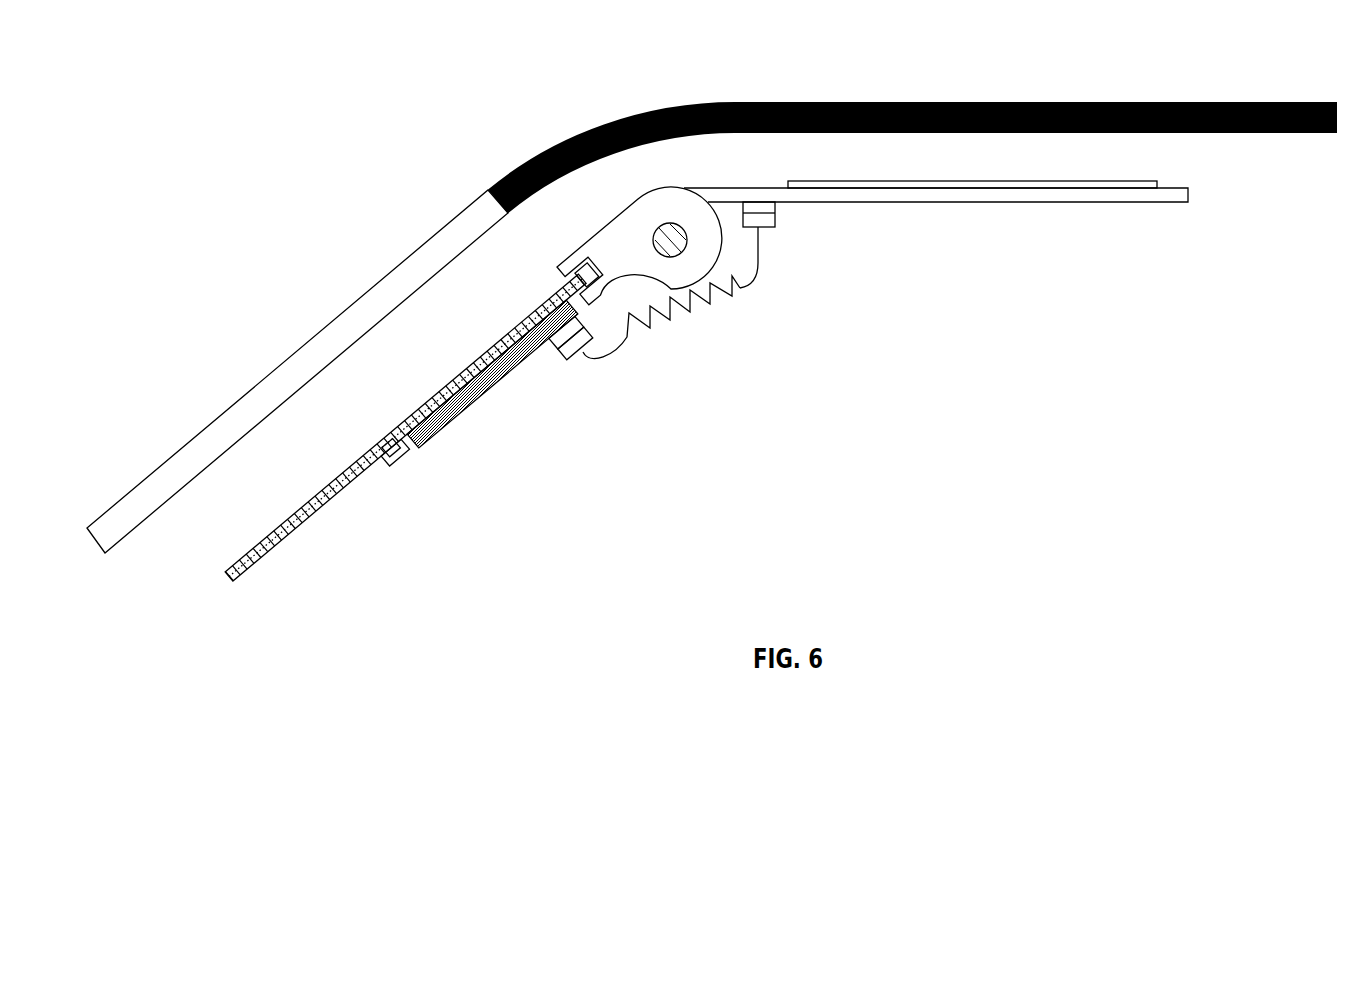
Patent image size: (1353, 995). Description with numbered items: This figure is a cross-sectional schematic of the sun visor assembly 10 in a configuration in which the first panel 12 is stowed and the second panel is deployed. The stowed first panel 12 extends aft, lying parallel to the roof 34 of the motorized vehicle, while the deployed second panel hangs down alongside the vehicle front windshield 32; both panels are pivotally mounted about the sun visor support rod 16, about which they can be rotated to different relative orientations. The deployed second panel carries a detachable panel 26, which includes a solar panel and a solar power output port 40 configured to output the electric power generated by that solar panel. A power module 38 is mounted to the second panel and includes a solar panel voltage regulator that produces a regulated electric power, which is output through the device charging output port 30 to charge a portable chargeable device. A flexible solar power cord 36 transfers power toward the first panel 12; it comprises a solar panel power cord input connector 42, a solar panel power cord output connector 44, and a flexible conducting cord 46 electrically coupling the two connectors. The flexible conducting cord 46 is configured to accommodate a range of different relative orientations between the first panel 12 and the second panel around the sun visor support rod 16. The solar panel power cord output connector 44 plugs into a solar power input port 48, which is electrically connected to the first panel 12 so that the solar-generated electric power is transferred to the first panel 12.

The sun visor assembly 10 is at (850, 397).
The first panel 12 is at (1130, 203).
The sun visor support rod 16 is at (668, 238).
The detachable panel 26 is at (293, 528).
The device charging output port 30 is at (400, 457).
The vehicle front windshield 32 is at (317, 348).
The roof 34 is at (987, 102).
The flexible solar power cord 36 is at (698, 410).
The power module 38 is at (458, 417).
The solar power output port 40 is at (550, 347).
The solar panel power cord input connector 42 is at (563, 360).
The solar panel power cord output connector 44 is at (777, 228).
The flexible conducting cord 46 is at (693, 318).
The solar power input port 48 is at (775, 210).